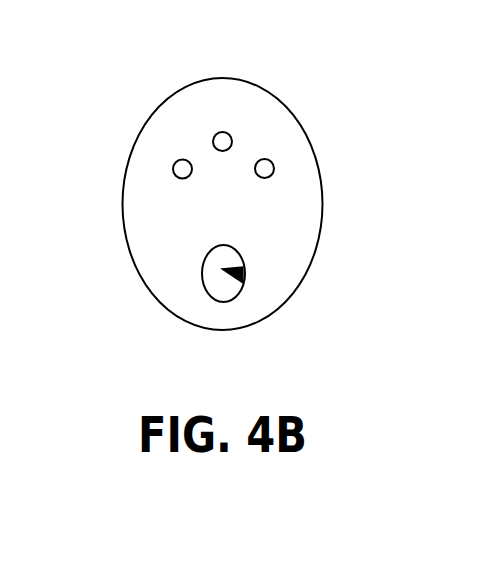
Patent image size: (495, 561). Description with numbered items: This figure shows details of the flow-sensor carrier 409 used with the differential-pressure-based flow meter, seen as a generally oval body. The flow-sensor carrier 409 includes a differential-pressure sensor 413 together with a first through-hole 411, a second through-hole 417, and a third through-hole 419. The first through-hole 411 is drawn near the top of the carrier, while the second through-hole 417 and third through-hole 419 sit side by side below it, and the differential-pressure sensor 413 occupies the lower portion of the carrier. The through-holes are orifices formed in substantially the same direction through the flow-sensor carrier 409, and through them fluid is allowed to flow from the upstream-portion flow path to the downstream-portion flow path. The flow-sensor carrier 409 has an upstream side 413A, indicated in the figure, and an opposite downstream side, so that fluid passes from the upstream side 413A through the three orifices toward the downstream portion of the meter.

The flow-sensor carrier 409 is at (255, 82).
The first through-hole 411 is at (218, 132).
The second through-hole 417 is at (173, 167).
The third through-hole 419 is at (274, 166).
The differential-pressure sensor 413 is at (243, 275).
The upstream side 413A is at (203, 273).